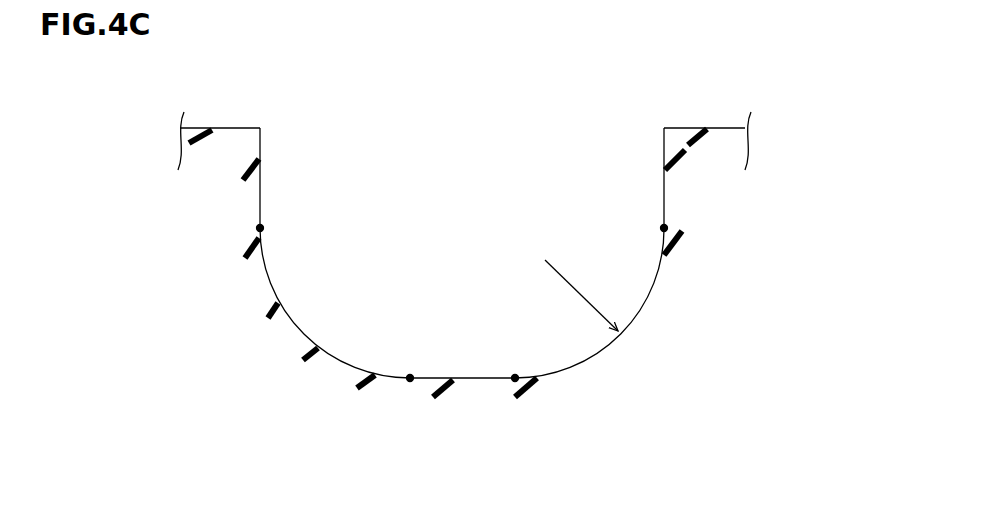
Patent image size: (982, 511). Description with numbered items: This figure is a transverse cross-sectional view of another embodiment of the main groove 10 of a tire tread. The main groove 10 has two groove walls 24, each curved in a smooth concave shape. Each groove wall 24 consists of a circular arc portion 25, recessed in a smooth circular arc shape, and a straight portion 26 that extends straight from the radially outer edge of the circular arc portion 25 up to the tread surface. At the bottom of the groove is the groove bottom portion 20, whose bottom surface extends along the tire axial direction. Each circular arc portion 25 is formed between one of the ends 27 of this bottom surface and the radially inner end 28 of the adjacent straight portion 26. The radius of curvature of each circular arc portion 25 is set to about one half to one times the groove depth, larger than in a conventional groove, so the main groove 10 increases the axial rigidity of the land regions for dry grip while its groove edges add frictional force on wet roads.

The main groove 10 is at (456, 168).
The groove bottom portion 20 is at (477, 376).
The groove wall 24 is at (403, 85).
The circular arc portion 25 is at (297, 322).
The straight portion 26 is at (262, 182).
The end of bottom surface 27 is at (410, 378).
The radially inner end of straight portion 28 is at (261, 228).